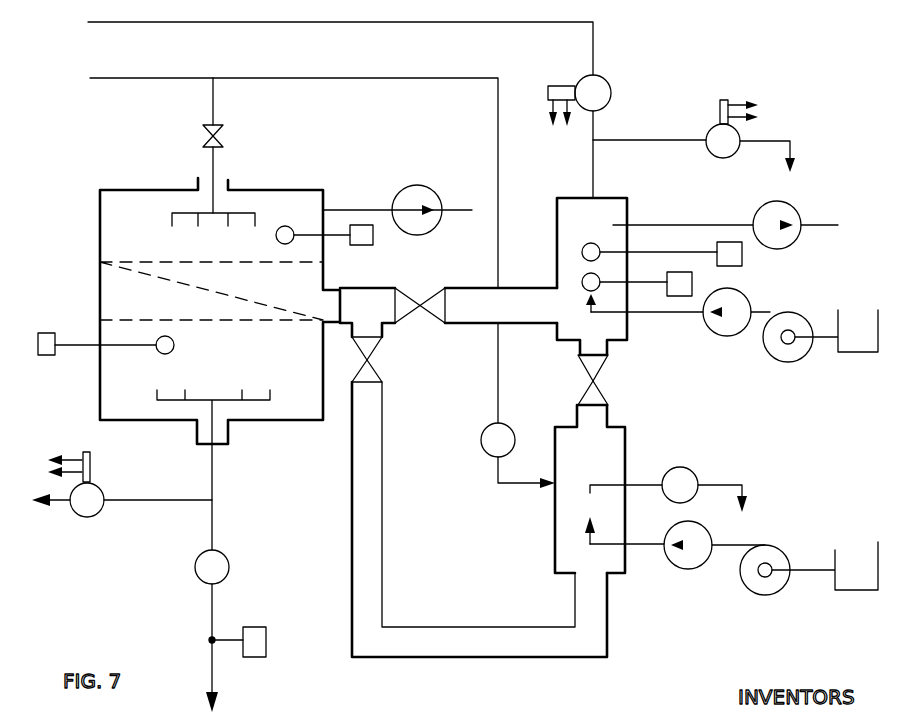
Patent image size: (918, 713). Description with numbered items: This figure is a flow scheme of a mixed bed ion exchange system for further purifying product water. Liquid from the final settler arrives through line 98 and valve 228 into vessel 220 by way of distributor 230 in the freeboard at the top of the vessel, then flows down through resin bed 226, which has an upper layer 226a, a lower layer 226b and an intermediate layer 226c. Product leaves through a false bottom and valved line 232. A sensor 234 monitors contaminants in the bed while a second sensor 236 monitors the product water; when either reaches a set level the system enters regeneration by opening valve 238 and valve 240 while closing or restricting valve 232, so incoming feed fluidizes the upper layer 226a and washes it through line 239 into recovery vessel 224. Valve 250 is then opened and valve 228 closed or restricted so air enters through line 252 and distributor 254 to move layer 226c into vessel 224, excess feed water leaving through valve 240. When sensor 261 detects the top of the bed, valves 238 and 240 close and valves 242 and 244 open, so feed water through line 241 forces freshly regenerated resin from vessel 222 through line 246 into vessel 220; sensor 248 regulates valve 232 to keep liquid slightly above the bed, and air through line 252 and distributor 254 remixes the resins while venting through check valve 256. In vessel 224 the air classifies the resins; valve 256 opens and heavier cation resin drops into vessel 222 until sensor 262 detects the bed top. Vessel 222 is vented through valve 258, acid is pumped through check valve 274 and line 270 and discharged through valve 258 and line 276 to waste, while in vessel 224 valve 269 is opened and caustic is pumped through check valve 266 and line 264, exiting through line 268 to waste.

The line 98 is at (136, 79).
The vessel 220 is at (162, 158).
The vessel 222 is at (555, 558).
The recovery vessel 224 is at (630, 205).
The resin bed 226 is at (126, 256).
The upper layer 226a is at (235, 280).
The lower layer 226b is at (230, 345).
The intermediate layer 226c is at (134, 298).
The valve 228 is at (224, 136).
The distributor 230 is at (236, 213).
The valved line 232 is at (228, 560).
The sensor 234 is at (58, 355).
The second sensor 236 is at (266, 605).
The valve 238 is at (422, 318).
The line 239 is at (520, 288).
The valve 240 is at (612, 85).
The line 241 is at (497, 393).
The valve 242 is at (485, 455).
The valve 244 is at (372, 362).
The line 246 is at (383, 568).
The sensor 248 is at (365, 247).
The valve 250 is at (95, 515).
The line 252 is at (180, 470).
The distributor 254 is at (262, 405).
The check valve 256 is at (462, 172).
The valve 258 is at (695, 470).
The sensor 261 is at (745, 255).
The sensor 262 is at (700, 282).
The line 264 is at (680, 313).
The check valve 266 is at (720, 338).
The line 268 is at (683, 108).
The valve 269 is at (820, 108).
The feed conduit 270 is at (647, 548).
The check valve 274 is at (707, 562).
The line 276 is at (748, 489).